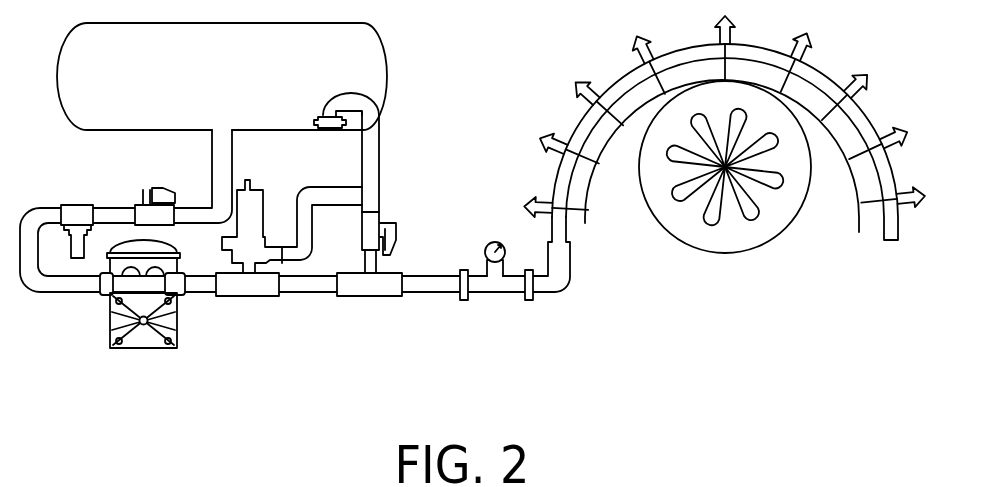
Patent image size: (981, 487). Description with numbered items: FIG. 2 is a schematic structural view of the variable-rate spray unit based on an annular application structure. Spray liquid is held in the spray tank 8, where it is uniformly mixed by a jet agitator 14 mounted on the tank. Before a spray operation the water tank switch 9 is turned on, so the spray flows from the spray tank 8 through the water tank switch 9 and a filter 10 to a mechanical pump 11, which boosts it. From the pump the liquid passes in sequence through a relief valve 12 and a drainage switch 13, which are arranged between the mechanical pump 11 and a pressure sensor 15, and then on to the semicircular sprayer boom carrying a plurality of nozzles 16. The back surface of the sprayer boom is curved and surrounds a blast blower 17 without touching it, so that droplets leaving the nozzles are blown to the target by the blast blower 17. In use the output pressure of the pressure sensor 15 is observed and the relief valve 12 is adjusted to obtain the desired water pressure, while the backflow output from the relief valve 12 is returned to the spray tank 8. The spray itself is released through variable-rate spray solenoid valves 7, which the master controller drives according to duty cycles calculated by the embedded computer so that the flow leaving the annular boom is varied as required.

The solenoid valve 7 is at (856, 218).
The spray tank 8 is at (72, 110).
The water tank switch 9 is at (140, 205).
The filter 10 is at (80, 205).
The mechanical pump 11 is at (110, 322).
The relief valve 12 is at (250, 297).
The drainage switch 13 is at (380, 216).
The jet agitator 14 is at (328, 130).
The pressure sensor 15 is at (487, 296).
The nozzle 16 is at (572, 80).
The blast blower 17 is at (655, 223).